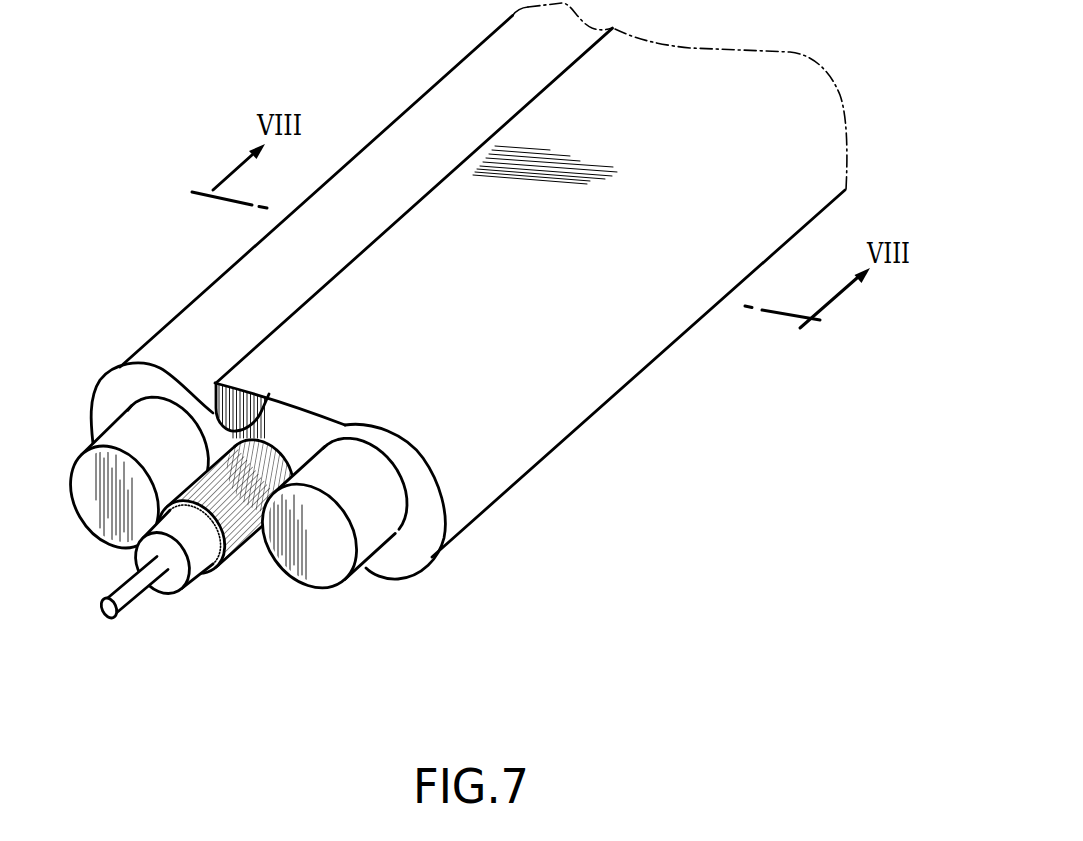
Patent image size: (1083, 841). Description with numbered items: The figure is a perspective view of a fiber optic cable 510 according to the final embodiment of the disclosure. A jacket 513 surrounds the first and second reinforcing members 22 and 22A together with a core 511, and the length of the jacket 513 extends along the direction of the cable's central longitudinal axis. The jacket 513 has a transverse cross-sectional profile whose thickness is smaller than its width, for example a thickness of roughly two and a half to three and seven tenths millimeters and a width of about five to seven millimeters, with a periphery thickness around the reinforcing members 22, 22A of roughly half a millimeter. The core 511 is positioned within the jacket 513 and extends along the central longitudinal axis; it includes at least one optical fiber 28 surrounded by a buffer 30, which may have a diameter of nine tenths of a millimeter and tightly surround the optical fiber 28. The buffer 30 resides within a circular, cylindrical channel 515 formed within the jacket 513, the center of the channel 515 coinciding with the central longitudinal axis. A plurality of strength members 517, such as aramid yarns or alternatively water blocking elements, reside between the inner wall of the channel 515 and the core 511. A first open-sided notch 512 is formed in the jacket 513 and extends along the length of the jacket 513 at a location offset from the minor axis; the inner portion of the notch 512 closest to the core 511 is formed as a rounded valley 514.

The fiber optic cable 510 is at (382, 97).
The core 511 is at (202, 562).
The first open-sided notch 512 is at (207, 380).
The jacket 513 is at (405, 553).
The rounded valley 514 is at (269, 394).
The circular, cylindrical channel 515 is at (287, 458).
The strength members 517 is at (229, 542).
The first reinforcing member 22 is at (93, 503).
The second reinforcing member 22A is at (338, 563).
The optical fiber 28 is at (131, 593).
The buffer 30 is at (196, 566).